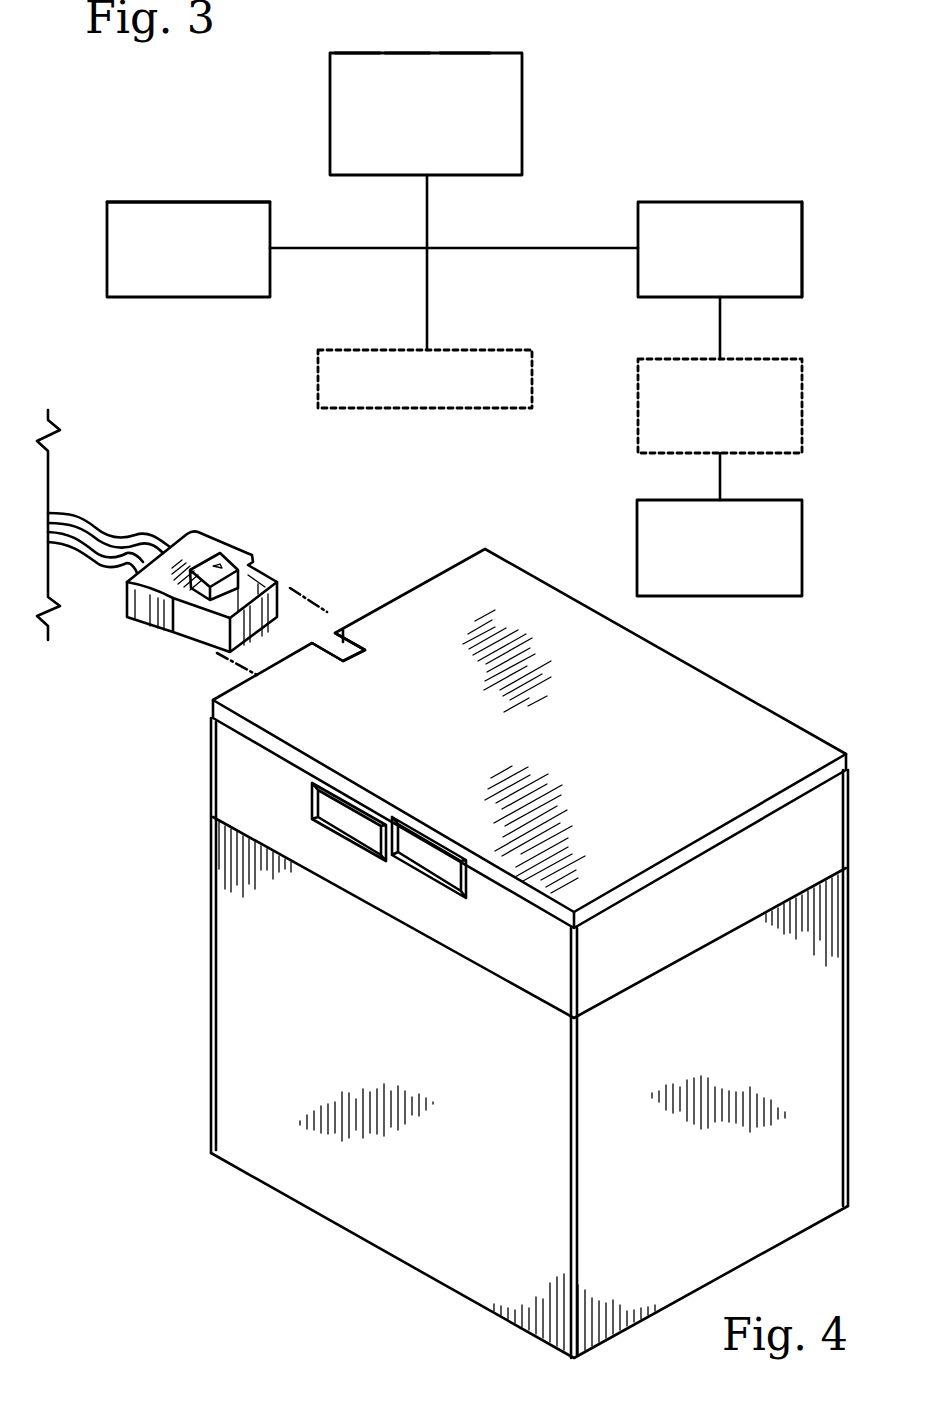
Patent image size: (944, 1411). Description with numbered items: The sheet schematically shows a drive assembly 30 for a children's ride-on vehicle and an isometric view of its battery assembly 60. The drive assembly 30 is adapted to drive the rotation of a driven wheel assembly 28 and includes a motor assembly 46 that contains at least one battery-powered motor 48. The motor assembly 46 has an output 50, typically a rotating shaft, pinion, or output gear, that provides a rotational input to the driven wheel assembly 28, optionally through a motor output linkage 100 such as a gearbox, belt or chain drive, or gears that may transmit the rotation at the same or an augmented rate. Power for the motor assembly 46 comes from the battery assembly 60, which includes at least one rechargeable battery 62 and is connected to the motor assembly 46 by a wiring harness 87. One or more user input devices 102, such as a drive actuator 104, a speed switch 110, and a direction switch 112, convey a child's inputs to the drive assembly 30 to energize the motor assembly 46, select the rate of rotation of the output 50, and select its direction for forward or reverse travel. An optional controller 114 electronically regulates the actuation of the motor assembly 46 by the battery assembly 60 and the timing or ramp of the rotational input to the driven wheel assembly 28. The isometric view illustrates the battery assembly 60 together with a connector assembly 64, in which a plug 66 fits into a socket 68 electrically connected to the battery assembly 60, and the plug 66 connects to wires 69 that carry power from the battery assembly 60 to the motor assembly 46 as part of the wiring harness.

In FIG. 3, the driven wheel assembly 28 is at (748, 500).
In FIG. 3, the drive assembly 30 is at (720, 113).
In FIG. 3, the motor assembly 46 is at (750, 200).
In FIG. 3, the battery-powered motor 48 is at (803, 243).
In FIG. 3, the output 50 is at (720, 342).
In FIG. 3, the battery assembly 60 is at (215, 198).
In FIG. 4, the battery assembly 60 is at (211, 1037).
In FIG. 3, the rechargeable battery 62 is at (140, 201).
In FIG. 4, the rechargeable battery 62 is at (211, 1098).
In FIG. 4, the connector assembly 64 is at (113, 720).
In FIG. 4, the plug 66 is at (155, 645).
In FIG. 4, the socket 68 is at (330, 623).
In FIG. 4, the wires 69 is at (98, 567).
In FIG. 3, the wiring harness 87 is at (545, 247).
In FIG. 3, the motor output linkage 100 is at (752, 358).
In FIG. 3, the user input devices 102 is at (492, 50).
In FIG. 3, the drive actuator 104 is at (343, 52).
In FIG. 3, the speed switch 110 is at (393, 52).
In FIG. 3, the direction switch 112 is at (448, 52).
In FIG. 3, the controller 114 is at (475, 350).